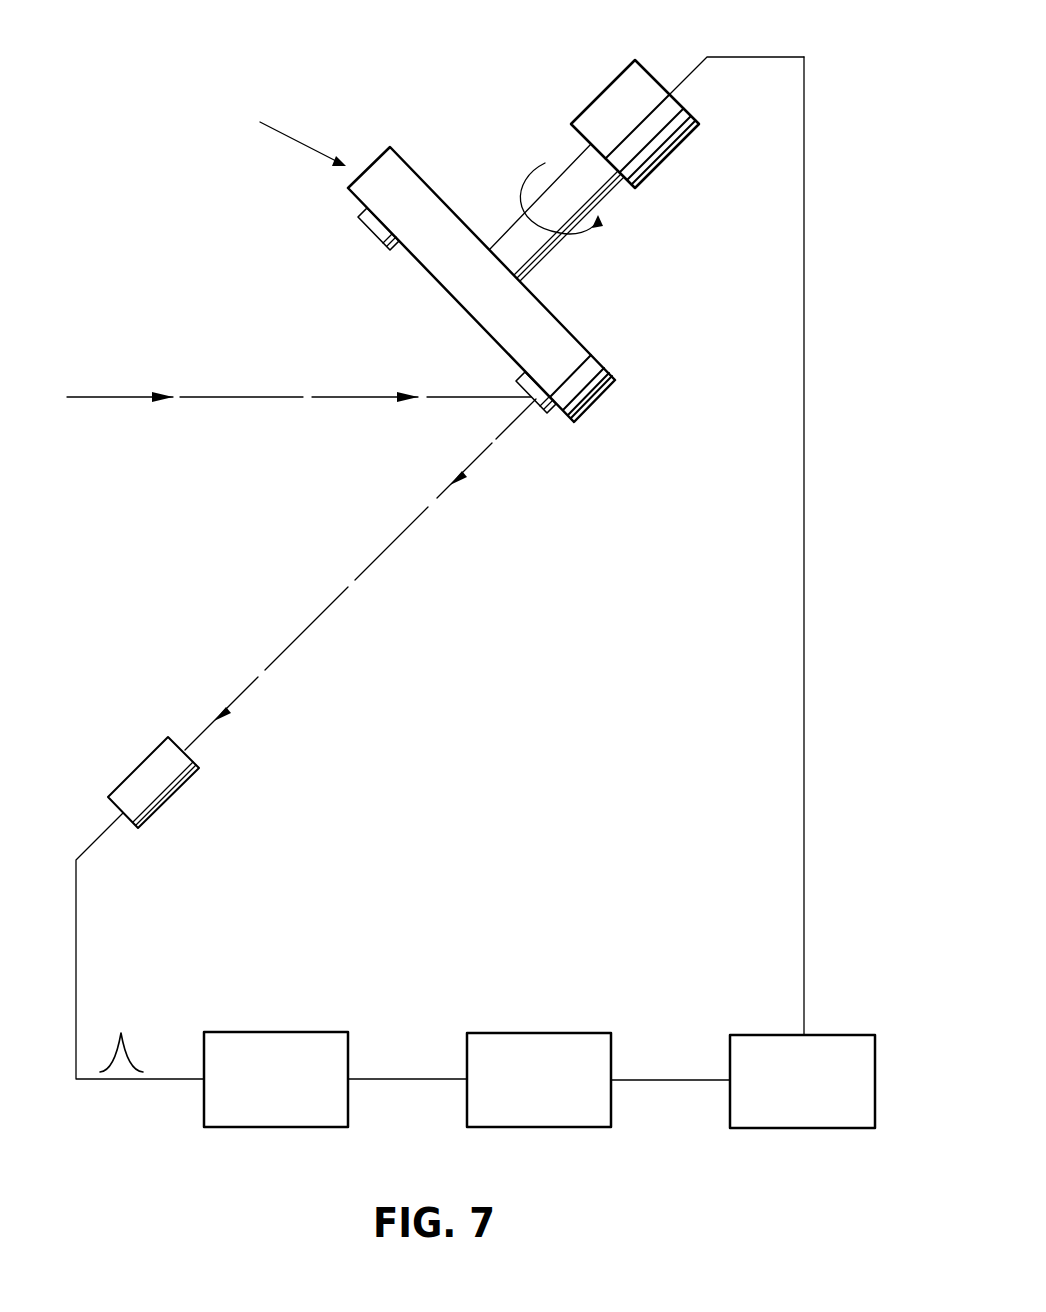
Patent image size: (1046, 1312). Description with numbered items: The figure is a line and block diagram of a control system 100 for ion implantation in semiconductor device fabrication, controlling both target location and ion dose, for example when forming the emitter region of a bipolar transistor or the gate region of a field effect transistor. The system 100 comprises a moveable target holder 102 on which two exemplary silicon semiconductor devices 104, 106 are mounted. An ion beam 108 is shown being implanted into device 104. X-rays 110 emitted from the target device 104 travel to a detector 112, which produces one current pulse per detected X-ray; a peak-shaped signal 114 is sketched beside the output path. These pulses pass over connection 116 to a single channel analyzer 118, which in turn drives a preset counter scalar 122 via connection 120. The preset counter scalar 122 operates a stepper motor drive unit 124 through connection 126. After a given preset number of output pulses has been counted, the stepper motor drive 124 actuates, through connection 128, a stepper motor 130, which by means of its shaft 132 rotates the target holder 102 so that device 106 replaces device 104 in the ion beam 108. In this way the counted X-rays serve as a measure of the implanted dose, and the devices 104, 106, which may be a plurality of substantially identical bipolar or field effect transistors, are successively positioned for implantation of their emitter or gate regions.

The control system 100 is at (848, 86).
The moveable target holder 102 is at (595, 345).
The Si semiconductor device 104 is at (552, 410).
The Si semiconductor device 106 is at (365, 238).
The ion beam 108 is at (355, 397).
The X-rays 110 is at (314, 622).
The detector 112 is at (173, 795).
The x-ray peak signal 114 is at (125, 1048).
The connection 116 is at (77, 942).
The single channel analyzer 118 is at (267, 1127).
The connection 120 is at (395, 1080).
The preset counter scalar 122 is at (528, 1127).
The stepper motor drive unit 124 is at (803, 1128).
The connection 126 is at (660, 1080).
The connection 128 is at (803, 653).
The stepper motor 130 is at (622, 82).
The shaft 132 is at (582, 162).